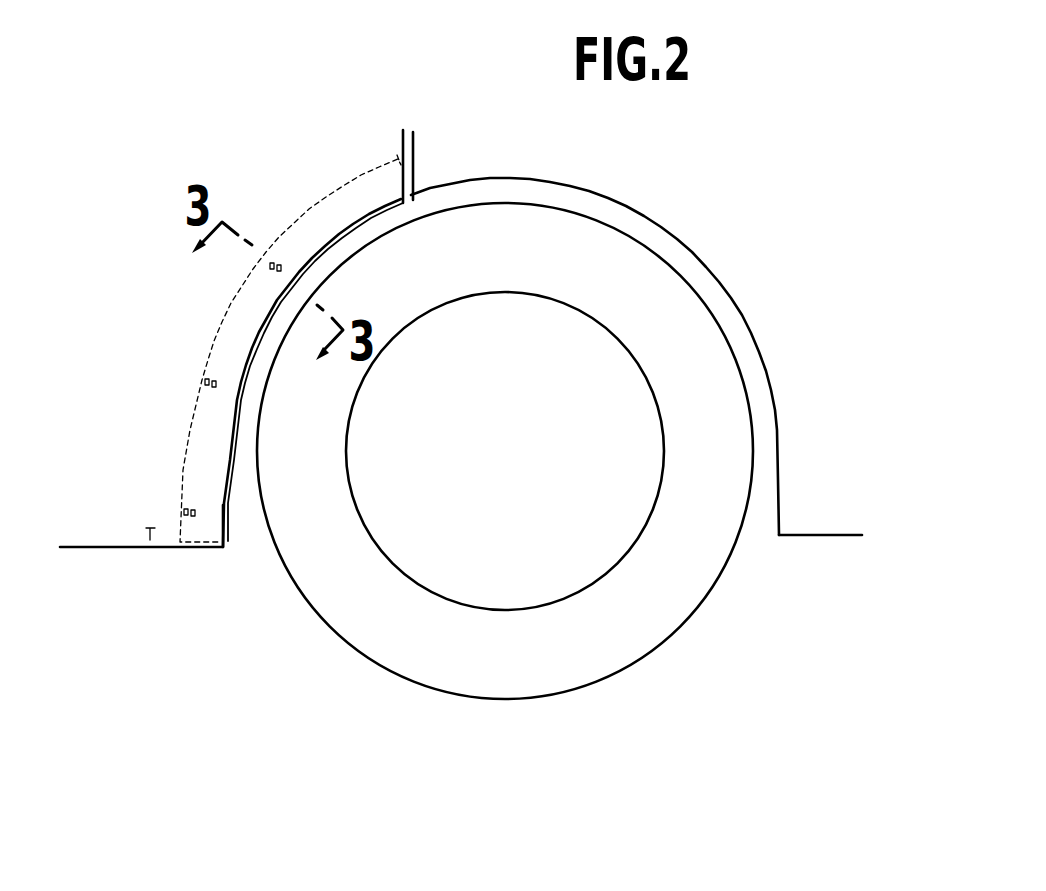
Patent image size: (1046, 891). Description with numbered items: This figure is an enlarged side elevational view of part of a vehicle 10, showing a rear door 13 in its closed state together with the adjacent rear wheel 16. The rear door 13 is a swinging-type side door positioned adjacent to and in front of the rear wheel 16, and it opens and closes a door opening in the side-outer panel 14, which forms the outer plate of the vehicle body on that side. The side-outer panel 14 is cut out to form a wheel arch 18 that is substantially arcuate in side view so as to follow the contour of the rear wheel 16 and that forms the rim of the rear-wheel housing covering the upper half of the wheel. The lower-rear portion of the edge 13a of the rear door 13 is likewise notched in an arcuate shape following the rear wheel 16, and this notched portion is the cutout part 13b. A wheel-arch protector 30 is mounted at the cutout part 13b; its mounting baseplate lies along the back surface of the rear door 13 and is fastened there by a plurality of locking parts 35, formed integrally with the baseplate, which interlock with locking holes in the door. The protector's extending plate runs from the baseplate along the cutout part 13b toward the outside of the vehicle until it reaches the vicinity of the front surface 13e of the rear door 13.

The vehicle 10 is at (334, 769).
The rear door 13 is at (103, 555).
The edge of the rear door 13a is at (404, 141).
The cutout part 13b is at (228, 524).
The front surface of the rear door 13e is at (150, 540).
The side-outer panel 14 is at (465, 170).
The rear wheel 16 is at (526, 680).
The wheel arch 18 is at (236, 455).
The wheel-arch protector 30 is at (318, 200).
The locking part 35 is at (270, 268).